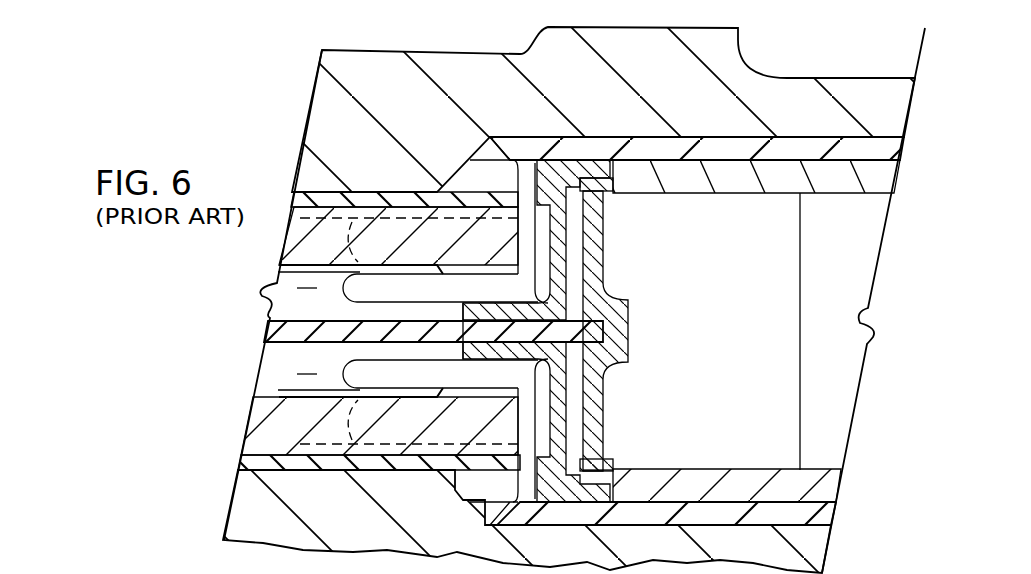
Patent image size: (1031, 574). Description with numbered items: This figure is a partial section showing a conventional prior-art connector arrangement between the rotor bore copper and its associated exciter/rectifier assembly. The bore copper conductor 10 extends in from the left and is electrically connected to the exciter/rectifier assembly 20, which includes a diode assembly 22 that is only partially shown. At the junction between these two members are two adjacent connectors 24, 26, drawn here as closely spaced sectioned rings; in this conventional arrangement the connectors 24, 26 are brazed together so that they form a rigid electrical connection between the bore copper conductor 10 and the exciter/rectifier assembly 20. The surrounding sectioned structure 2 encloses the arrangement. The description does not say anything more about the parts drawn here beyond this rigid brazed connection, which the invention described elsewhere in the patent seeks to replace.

The housing 2 is at (327, 111).
The bore copper conductor 10 is at (247, 371).
The exciter/rectifier assembly 20 is at (868, 152).
The diode assembly 22 is at (866, 198).
The connector 24 is at (560, 268).
The connector 26 is at (597, 216).